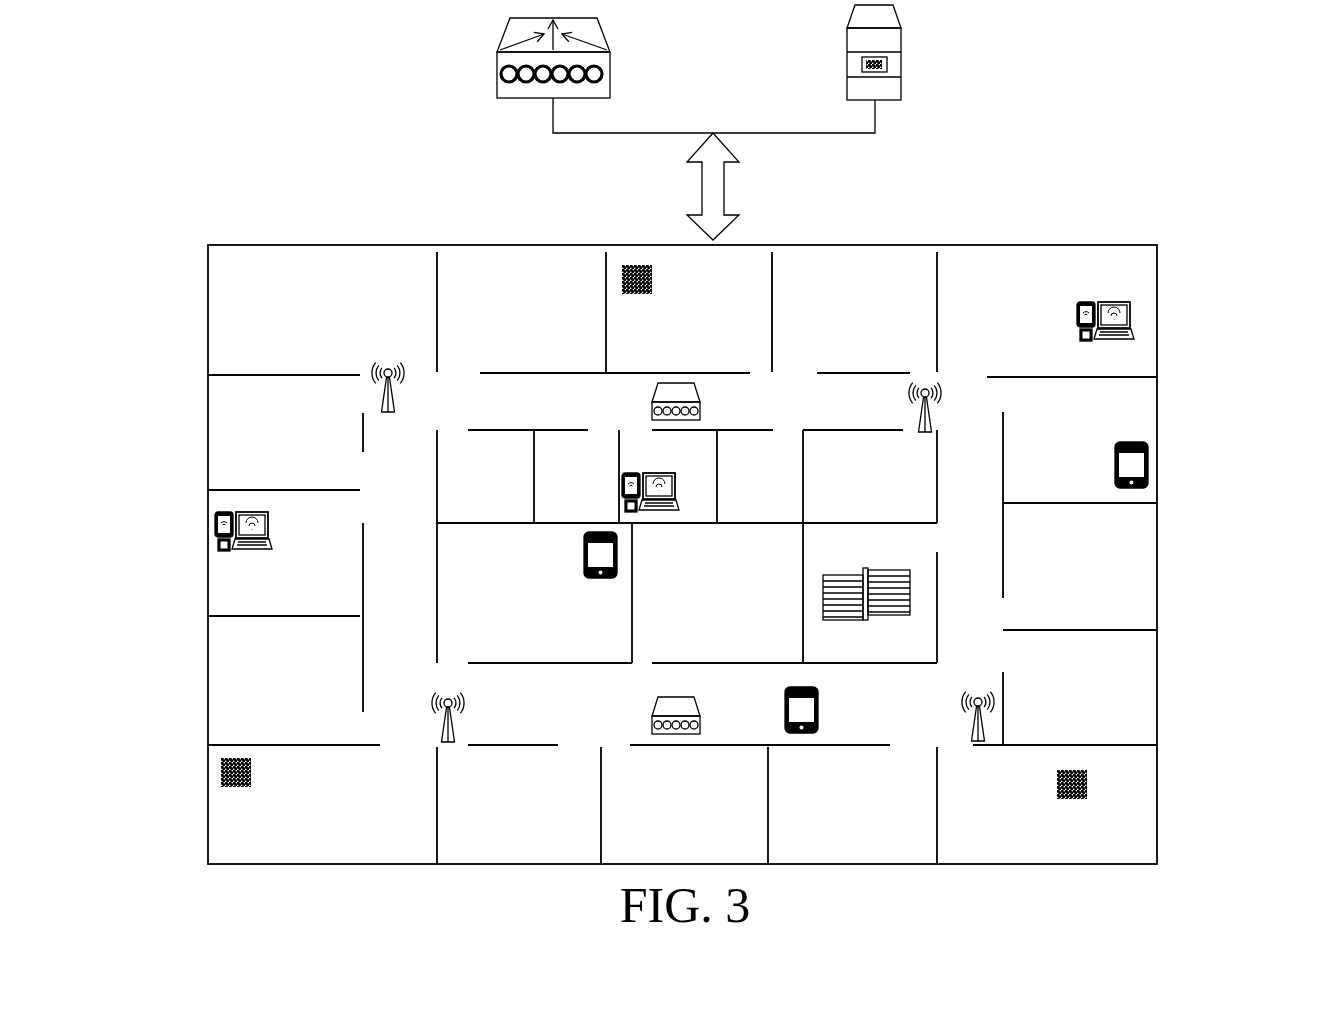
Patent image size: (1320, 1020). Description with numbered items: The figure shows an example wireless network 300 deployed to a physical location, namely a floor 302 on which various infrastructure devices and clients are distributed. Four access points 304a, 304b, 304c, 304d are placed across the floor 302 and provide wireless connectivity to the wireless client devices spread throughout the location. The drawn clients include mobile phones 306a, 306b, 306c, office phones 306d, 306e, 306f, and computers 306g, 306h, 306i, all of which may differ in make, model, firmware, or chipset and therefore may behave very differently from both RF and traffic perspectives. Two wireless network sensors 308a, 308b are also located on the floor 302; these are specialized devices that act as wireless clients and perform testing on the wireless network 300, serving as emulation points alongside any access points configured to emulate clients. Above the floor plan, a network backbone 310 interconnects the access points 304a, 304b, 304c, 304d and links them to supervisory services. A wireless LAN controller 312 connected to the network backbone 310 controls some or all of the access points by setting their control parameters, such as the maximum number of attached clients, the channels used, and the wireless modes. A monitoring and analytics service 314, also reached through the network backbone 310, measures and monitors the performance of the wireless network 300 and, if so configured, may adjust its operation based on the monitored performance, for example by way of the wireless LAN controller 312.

The wireless network 300 is at (1216, 77).
The floor 302 is at (216, 876).
The access point 304a is at (357, 356).
The access point 304b is at (946, 411).
The access point 304c is at (419, 688).
The access point 304d is at (972, 680).
The client device 306a is at (824, 710).
The client device 306b is at (597, 592).
The client device 306c is at (1098, 458).
The client device 306d is at (656, 316).
The client device 306e is at (250, 799).
The client device 306f is at (1061, 810).
The client device 306g is at (245, 563).
The client device 306h is at (692, 498).
The client device 306i is at (1066, 320).
The wireless network sensor 308a is at (640, 413).
The wireless network sensor 308b is at (640, 713).
The network backbone 310 is at (688, 190).
The wireless LAN controller (WLC) 312 is at (486, 51).
The monitoring and analytics service 314 is at (895, 113).